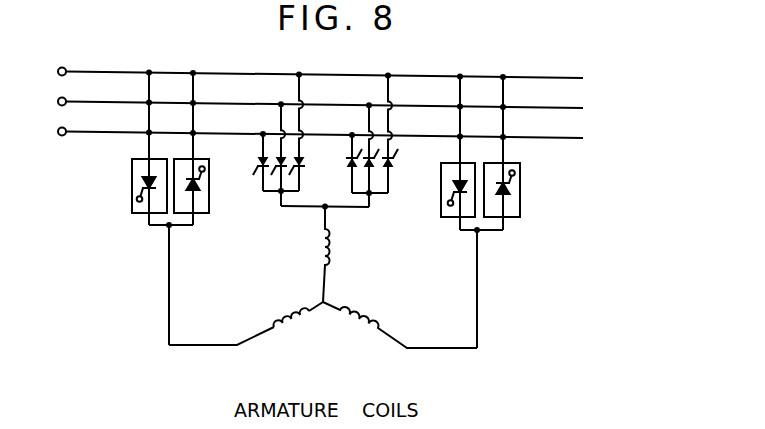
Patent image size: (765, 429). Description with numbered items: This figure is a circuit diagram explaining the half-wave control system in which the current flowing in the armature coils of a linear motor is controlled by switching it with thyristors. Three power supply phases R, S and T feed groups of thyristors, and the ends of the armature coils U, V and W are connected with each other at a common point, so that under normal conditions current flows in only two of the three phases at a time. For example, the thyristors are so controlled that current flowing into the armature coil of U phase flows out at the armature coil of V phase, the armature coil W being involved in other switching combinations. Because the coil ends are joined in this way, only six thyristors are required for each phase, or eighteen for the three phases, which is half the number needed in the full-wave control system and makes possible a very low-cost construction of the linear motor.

The power supply phase R is at (310, 72).
The power supply phase S is at (310, 102).
The power supply phase T is at (309, 132).
The armature coil of U phase U is at (337, 255).
The armature coil of V phase V is at (400, 325).
The armature coil of W phase W is at (246, 326).